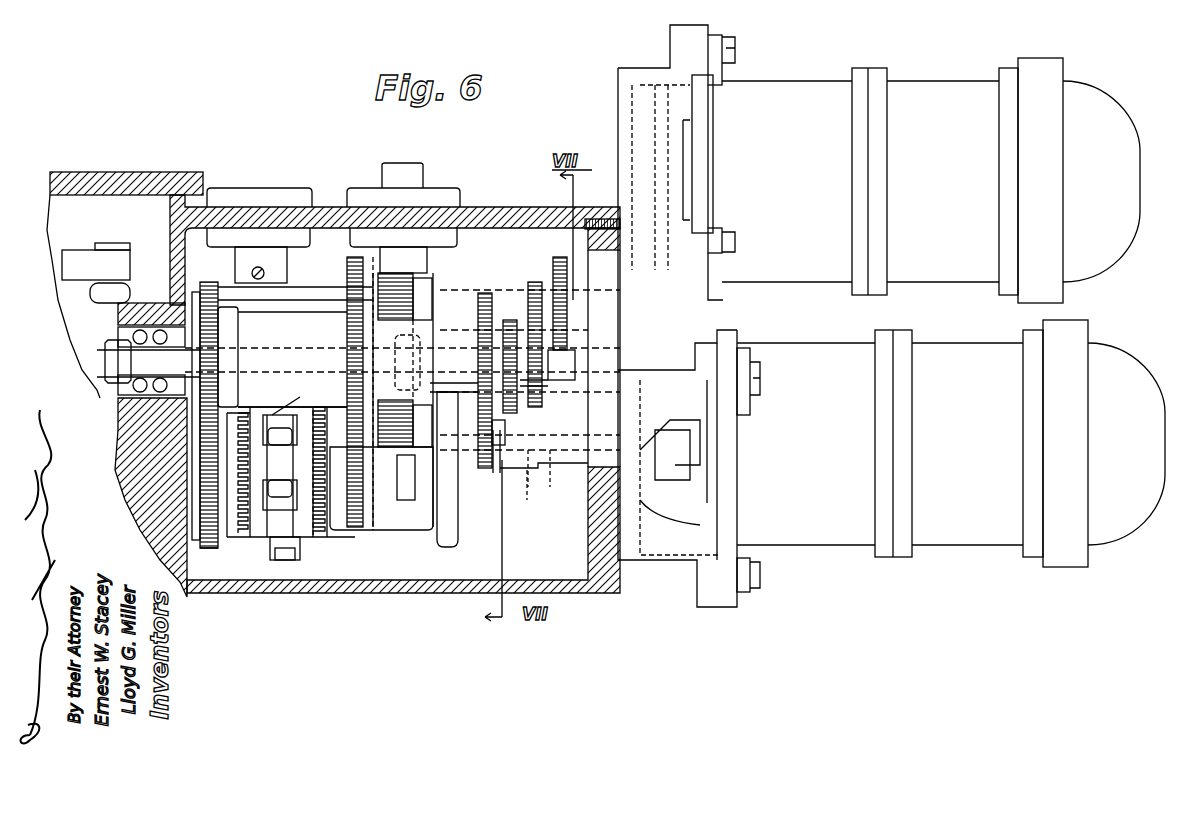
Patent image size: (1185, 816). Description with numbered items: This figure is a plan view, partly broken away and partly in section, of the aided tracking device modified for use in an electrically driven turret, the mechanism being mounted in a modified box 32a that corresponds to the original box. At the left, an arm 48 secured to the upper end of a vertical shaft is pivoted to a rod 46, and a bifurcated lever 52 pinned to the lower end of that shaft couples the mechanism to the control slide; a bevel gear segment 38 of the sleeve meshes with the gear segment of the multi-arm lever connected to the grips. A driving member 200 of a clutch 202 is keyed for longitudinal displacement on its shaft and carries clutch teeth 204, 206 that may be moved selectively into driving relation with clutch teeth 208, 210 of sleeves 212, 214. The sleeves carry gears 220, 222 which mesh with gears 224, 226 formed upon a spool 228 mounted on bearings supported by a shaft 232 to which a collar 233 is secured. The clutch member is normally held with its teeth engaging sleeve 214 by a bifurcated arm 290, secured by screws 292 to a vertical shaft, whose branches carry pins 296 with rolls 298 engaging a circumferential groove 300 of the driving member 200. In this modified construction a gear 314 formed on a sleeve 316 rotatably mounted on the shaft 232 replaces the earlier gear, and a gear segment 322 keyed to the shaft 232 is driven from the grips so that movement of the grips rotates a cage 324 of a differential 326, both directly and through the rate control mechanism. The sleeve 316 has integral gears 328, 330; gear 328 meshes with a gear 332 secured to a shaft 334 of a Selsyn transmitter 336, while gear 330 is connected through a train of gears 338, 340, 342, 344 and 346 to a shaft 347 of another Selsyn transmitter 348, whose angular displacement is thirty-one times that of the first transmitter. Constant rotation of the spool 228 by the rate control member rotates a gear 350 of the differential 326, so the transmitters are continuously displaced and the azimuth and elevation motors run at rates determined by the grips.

The box 32a is at (253, 215).
The arm 48 is at (124, 266).
The screws 292 is at (252, 272).
The spool 228 is at (286, 322).
The rod 46 is at (325, 290).
The gear 350 is at (387, 379).
The gear 314 is at (422, 305).
The differential 326 is at (449, 257).
The gear 330 is at (506, 320).
The gear 328 is at (483, 293).
The gear 342 is at (535, 282).
The gear 346 is at (560, 257).
The shaft 347 is at (606, 300).
The gear 224 is at (224, 346).
The gear 226 is at (347, 340).
The collar 233 is at (380, 360).
The shaft 232 is at (402, 372).
The rolls 298 is at (322, 572).
The sleeve 214 is at (336, 400).
The sleeve 316 is at (475, 392).
The bevel gear segment 38 is at (462, 420).
The gear 344 is at (562, 352).
The gear 340 is at (538, 410).
The bifurcated lever 52 is at (107, 390).
The sleeve 212 is at (230, 457).
The pins 296 is at (285, 442).
The clutch teeth 206 is at (279, 476).
The circumferential groove 300 is at (297, 478).
The cage 324 is at (378, 455).
The gear 332 is at (478, 470).
The gear 338 is at (500, 432).
The shaft 334 is at (529, 497).
The gear segment 322 is at (540, 470).
The gear 220 is at (210, 548).
The clutch teeth 204 is at (245, 540).
The clutch teeth 208 is at (240, 560).
The clutch 202 is at (277, 560).
The bifurcated arm 290 is at (287, 562).
The clutch teeth 210 is at (335, 540).
The driving member 200 is at (355, 548).
The gear 222 is at (396, 531).
The Selsyn transmitter 348 is at (1090, 100).
The Selsyn transmitter 336 is at (1110, 345).